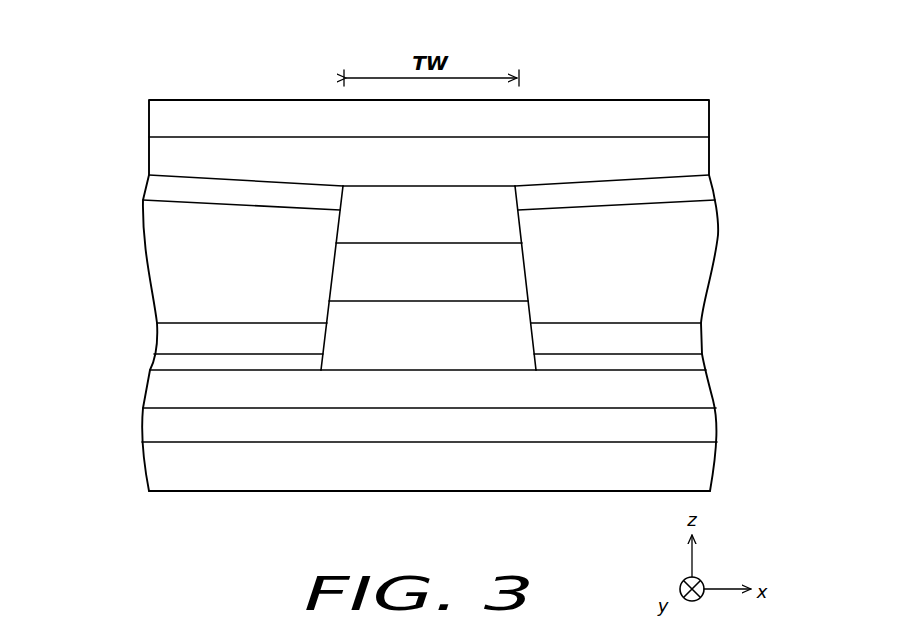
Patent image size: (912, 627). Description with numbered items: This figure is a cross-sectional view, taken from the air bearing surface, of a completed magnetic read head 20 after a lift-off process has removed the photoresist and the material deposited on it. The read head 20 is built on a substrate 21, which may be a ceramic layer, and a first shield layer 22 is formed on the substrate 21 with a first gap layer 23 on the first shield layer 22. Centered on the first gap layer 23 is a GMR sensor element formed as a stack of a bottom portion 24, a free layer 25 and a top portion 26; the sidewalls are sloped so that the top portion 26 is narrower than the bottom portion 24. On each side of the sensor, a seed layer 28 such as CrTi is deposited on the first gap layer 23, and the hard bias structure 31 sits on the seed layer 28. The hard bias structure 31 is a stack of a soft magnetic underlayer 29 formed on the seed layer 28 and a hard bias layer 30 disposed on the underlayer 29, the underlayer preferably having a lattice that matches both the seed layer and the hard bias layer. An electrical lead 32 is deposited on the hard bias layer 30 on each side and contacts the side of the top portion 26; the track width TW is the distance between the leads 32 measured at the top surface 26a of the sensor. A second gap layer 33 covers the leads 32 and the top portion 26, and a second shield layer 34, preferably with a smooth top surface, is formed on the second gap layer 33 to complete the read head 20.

The magnetic read head 20 is at (113, 77).
The substrate 21 is at (693, 466).
The first shield layer 22 is at (693, 424).
The first gap layer 23 is at (693, 388).
The bottom portion 24 is at (370, 351).
The free layer 25 is at (423, 275).
The top portion 26 is at (472, 223).
The top surface 26a is at (491, 186).
The seed layer 28 is at (429, 367).
The soft magnetic underlayer 29 is at (165, 338).
The hard bias layer 30 is at (165, 258).
The hard bias structure 31 is at (388, 289).
The electrical lead 32 is at (163, 183).
The second gap layer 33 is at (693, 148).
The second shield layer 34 is at (693, 110).